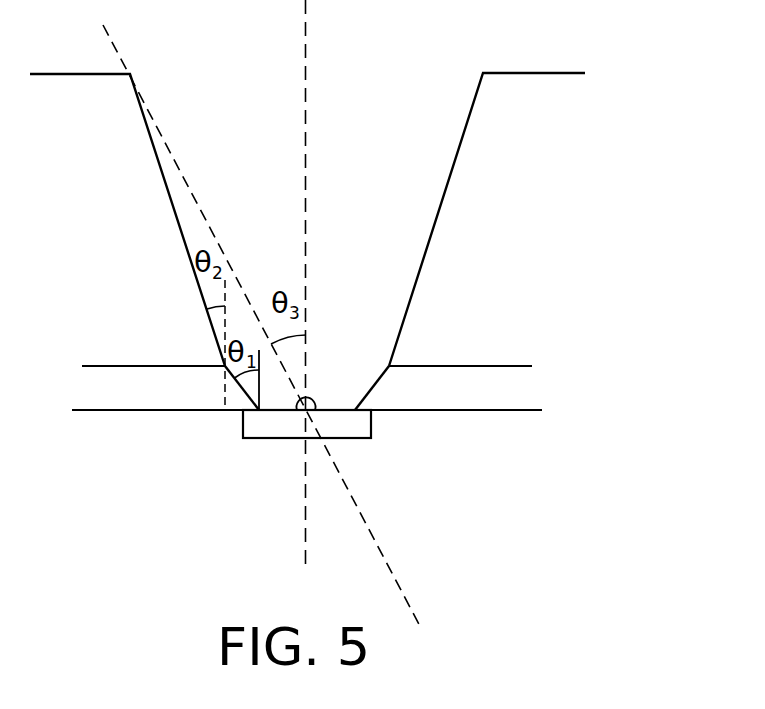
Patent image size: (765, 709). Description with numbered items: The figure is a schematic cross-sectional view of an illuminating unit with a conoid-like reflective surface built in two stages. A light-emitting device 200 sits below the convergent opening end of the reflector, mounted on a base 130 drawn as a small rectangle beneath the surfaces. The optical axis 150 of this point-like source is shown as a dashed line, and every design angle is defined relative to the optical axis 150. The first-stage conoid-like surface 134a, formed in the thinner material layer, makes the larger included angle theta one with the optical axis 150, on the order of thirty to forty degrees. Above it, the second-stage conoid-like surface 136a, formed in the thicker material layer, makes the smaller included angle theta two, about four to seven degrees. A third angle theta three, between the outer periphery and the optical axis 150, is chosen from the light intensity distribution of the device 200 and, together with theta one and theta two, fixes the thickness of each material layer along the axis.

The optical axis 150 is at (306, 105).
The second-stage conoid-like surface 136a is at (437, 218).
The first-stage conoid-like surface 134a is at (371, 389).
The light-emitting device 200 is at (315, 408).
The substrate / chip 130 is at (273, 425).